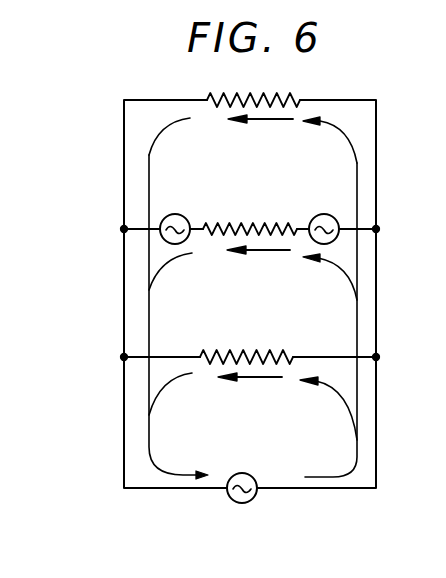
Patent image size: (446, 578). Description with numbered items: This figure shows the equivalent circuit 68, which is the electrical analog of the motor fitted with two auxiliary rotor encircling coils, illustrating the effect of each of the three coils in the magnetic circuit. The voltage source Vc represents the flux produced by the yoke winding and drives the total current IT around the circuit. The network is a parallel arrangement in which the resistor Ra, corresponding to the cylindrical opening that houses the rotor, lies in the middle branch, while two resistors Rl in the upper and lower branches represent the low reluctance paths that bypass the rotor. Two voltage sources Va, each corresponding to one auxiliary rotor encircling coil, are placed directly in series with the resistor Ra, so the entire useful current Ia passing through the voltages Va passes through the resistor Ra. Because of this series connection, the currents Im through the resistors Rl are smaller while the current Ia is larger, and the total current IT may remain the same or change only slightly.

The equivalent circuit 68 is at (92, 308).
The resistor Rl is at (250, 213).
The resistor Ra is at (250, 215).
The voltage source Va is at (249, 216).
The voltage source Vc is at (242, 502).
The total current IT is at (253, 317).
The shunted current Im is at (253, 277).
The useful current Ia is at (253, 273).